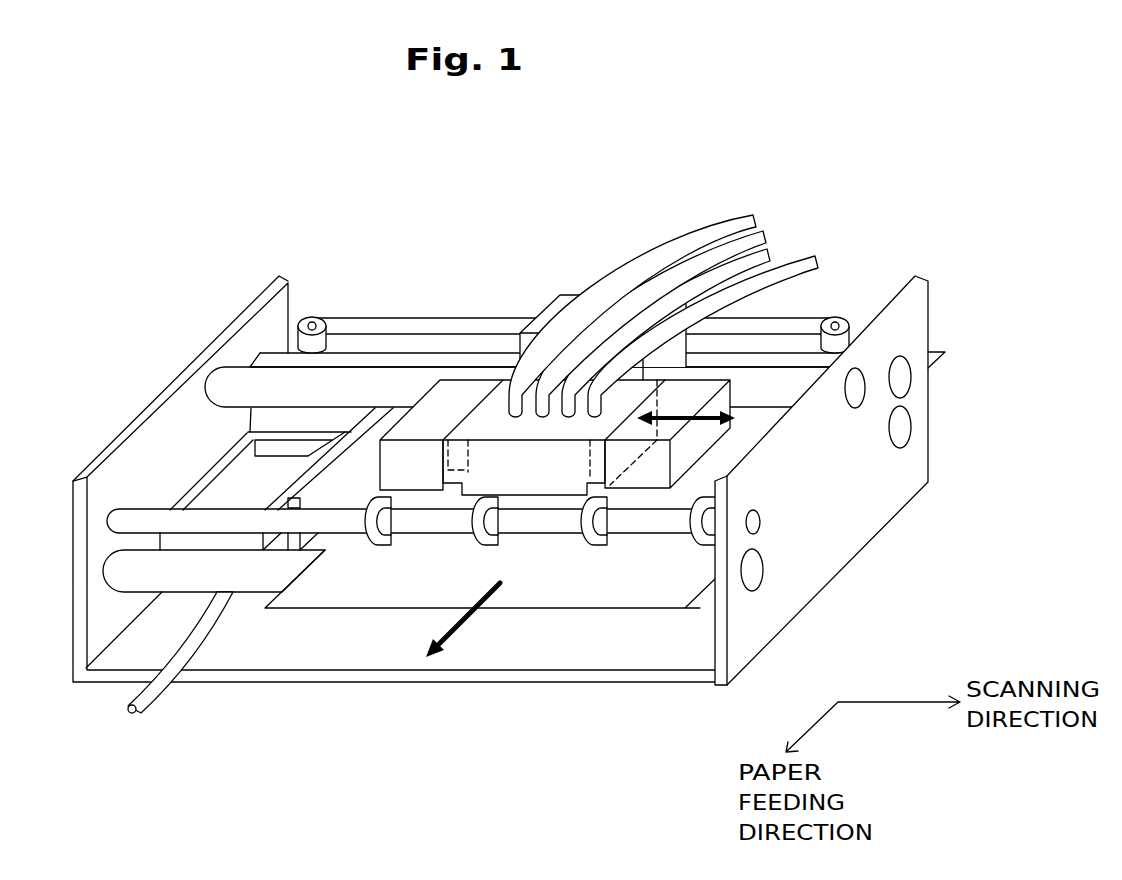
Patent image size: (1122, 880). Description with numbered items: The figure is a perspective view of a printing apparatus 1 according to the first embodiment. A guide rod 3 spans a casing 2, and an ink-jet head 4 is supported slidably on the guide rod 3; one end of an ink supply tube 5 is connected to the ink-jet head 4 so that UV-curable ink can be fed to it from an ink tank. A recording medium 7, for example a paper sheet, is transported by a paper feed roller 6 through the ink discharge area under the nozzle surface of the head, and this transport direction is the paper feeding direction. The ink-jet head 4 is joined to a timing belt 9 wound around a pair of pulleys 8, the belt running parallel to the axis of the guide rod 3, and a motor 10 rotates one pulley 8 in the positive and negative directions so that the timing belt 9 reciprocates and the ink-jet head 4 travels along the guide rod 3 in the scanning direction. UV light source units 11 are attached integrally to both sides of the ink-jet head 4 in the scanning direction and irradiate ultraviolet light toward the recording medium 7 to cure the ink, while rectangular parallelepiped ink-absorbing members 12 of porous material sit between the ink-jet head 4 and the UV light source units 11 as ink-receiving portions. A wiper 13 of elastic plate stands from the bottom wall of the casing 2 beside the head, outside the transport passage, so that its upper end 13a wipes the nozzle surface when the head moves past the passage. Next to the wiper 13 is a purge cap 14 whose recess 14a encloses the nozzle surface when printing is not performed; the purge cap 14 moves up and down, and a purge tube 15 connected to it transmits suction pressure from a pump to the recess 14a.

The printing apparatus 1 is at (525, 453).
The casing 2 is at (795, 582).
The guide rod 3 is at (294, 346).
The ink-jet head 4 is at (522, 467).
The ink supply tube 5 is at (680, 232).
The paper feed roller 6 is at (393, 527).
The recording medium 7 is at (673, 593).
The pulleys 8 is at (313, 318).
The timing belt 9 is at (407, 318).
The motor 10 is at (228, 383).
The UV light source units 11 is at (462, 378).
The ink-absorbing members 12 is at (517, 413).
The wiper 13 is at (340, 487).
The upper end of wiper 13a is at (308, 482).
The purge cap 14 is at (200, 510).
The recess 14a is at (230, 497).
The purge tube 15 is at (160, 698).